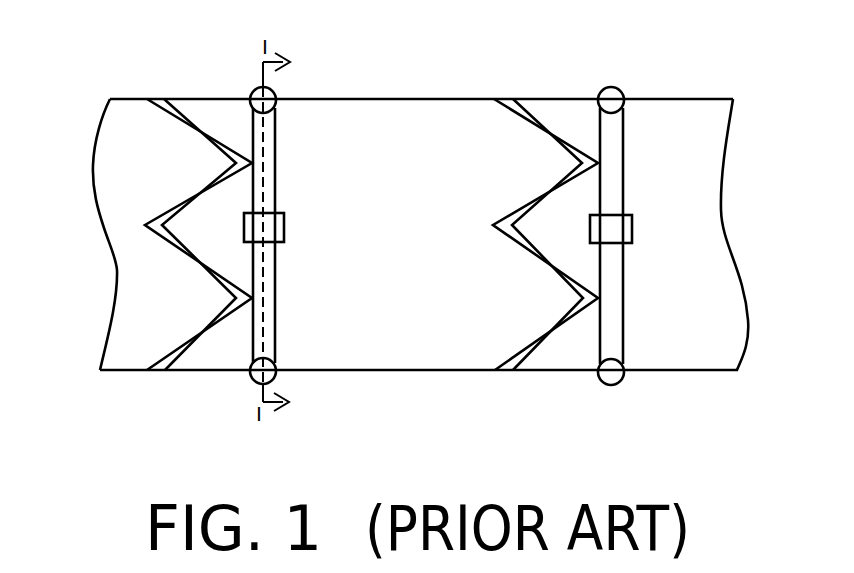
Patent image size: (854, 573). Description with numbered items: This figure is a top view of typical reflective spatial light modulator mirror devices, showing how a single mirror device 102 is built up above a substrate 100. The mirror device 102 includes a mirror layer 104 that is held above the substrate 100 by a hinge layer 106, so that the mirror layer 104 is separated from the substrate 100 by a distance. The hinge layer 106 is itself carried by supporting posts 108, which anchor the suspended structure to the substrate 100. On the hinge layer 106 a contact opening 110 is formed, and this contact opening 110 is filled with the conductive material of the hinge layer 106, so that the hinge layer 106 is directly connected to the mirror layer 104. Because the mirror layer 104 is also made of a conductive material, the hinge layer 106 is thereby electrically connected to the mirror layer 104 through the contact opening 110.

The substrate 100 is at (158, 365).
The mirror device 102 is at (128, 98).
The mirror layer 104 is at (120, 162).
The hinge layer 106 is at (253, 127).
The supporting posts 108 is at (270, 94).
The contact opening 110 is at (284, 230).